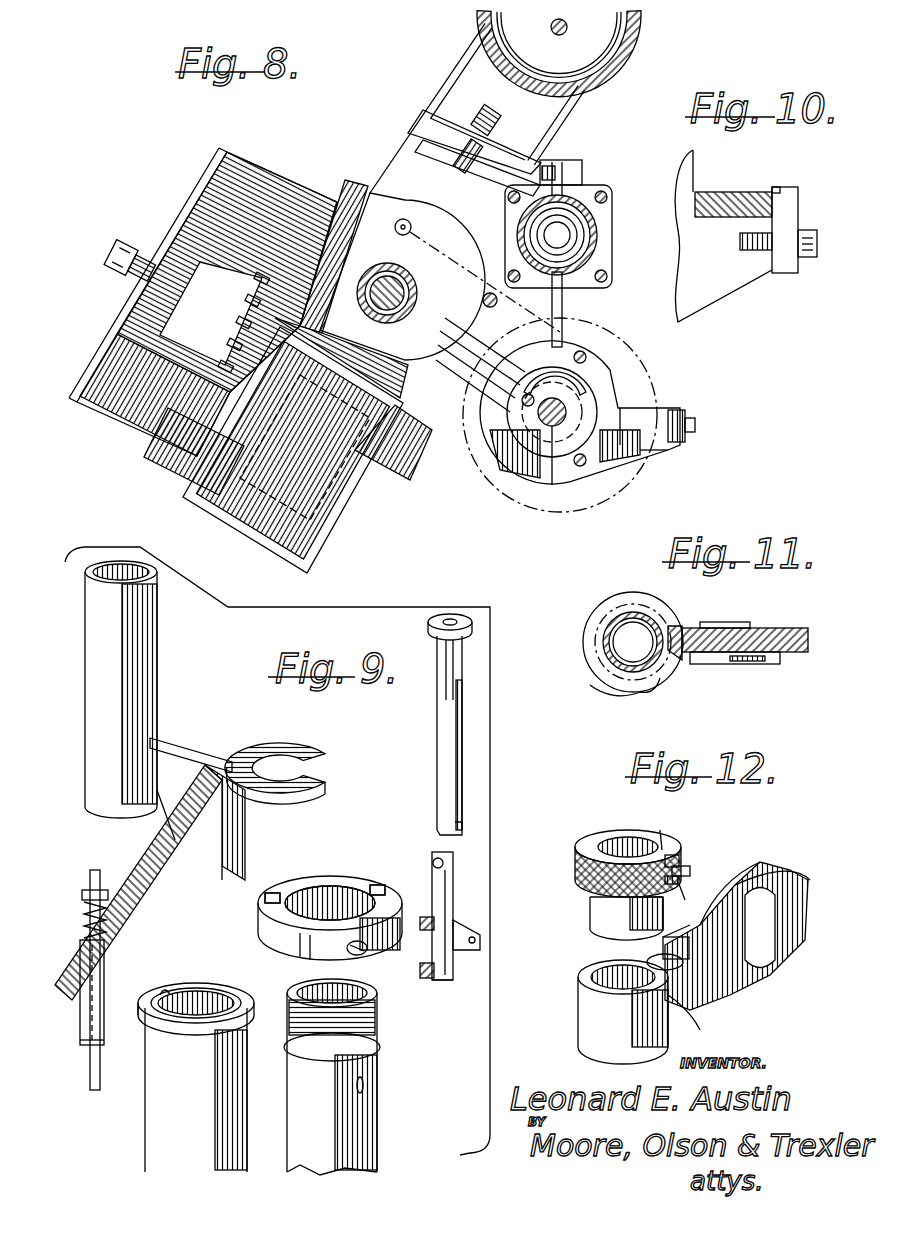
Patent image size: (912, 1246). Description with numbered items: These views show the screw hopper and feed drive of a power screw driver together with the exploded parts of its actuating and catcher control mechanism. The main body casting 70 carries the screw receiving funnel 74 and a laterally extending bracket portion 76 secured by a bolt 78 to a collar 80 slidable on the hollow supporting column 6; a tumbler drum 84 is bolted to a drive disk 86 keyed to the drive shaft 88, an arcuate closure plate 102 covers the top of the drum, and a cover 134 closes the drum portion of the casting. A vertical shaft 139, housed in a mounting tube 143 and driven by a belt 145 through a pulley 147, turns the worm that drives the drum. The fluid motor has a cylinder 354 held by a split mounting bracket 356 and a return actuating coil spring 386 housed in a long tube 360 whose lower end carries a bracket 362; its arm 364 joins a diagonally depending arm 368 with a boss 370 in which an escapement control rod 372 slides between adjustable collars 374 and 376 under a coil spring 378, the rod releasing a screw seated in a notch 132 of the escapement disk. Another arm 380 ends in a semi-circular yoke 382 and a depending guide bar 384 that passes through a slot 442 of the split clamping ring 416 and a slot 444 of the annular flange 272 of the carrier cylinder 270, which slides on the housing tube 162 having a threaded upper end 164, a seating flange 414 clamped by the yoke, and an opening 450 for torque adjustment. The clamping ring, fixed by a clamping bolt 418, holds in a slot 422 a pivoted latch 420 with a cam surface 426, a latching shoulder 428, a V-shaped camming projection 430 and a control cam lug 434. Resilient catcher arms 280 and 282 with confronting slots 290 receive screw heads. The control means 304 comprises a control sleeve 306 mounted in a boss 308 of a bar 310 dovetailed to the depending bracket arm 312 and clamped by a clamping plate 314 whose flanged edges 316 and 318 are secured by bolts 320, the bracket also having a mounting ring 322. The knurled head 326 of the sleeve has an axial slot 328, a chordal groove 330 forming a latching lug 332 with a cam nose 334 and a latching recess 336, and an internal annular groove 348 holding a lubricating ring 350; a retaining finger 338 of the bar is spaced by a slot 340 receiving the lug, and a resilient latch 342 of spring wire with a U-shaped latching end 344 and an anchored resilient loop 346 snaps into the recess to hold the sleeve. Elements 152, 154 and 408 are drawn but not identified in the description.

In FIG. 8, the supporting column 6 is at (630, 47).
In FIG. 8, the collar 80 is at (605, 72).
In FIG. 8, the pin 408 is at (548, 28).
In FIG. 8, the bolt 78 is at (425, 125).
In FIG. 8, the bracket portion 76 is at (410, 160).
In FIG. 8, the pulley 147 is at (390, 195).
In FIG. 8, the drive shaft 88 is at (120, 248).
In FIG. 8, the drive disk 86 is at (100, 420).
In FIG. 8, the tumbler drum 84 is at (112, 450).
In FIG. 8, the main body casting 70 is at (175, 517).
In FIG. 8, the closure plate 102 is at (262, 348).
In FIG. 8, the screw receiving funnel 74 is at (335, 560).
In FIG. 8, the cover 134 is at (410, 480).
In FIG. 8, the mounting tube 143 is at (410, 290).
In FIG. 8, the vertical shaft 139 is at (405, 300).
In FIG. 8, the link 154 is at (482, 355).
In FIG. 8, the link 152 is at (480, 368).
In FIG. 8, the cylinder 354 is at (575, 200).
In FIG. 8, the split mounting bracket 356 is at (600, 230).
In FIG. 8, the return actuating coil spring 386 is at (578, 238).
In FIG. 8, the long tube 360 is at (570, 250).
In FIG. 9, the long tube 360 is at (92, 705).
In FIG. 8, the bracket 362 is at (566, 290).
In FIG. 9, the bracket 362 is at (210, 752).
In FIG. 8, the yoke 382 is at (620, 380).
In FIG. 9, the yoke 382 is at (272, 760).
In FIG. 8, the notch 132 is at (552, 484).
In FIG. 8, the belt 145 is at (485, 480).
In FIG. 8, the bar 310 is at (660, 408).
In FIG. 10, the bar 310 is at (728, 200).
In FIG. 12, the bar 310 is at (790, 930).
In FIG. 8, the bolts 320 is at (695, 420).
In FIG. 10, the bolts 320 is at (808, 230).
In FIG. 8, the mounting ring 322 is at (670, 452).
In FIG. 10, the bracket arm 312 is at (706, 295).
In FIG. 10, the clamping plate 314 is at (790, 265).
In FIG. 10, the flanged edge 318 is at (778, 187).
In FIG. 10, the flanged edge 316 is at (780, 270).
In FIG. 11, the knurled head portion 326 is at (583, 658).
In FIG. 12, the knurled head portion 326 is at (578, 878).
In FIG. 11, the catcher arm 280 is at (612, 625).
In FIG. 11, the catcher arm 282 is at (660, 600).
In FIG. 11, the control means 304 is at (590, 690).
In FIG. 11, the axial slot 328 is at (660, 692).
In FIG. 11, the latching lug 332 is at (690, 622).
In FIG. 12, the latching lug 332 is at (688, 868).
In FIG. 11, the retaining finger 338 is at (735, 635).
In FIG. 12, the retaining finger 338 is at (663, 945).
In FIG. 11, the cam nose 334 is at (688, 664).
In FIG. 12, the cam nose 334 is at (684, 899).
In FIG. 11, the U-shaped latching end 344 is at (758, 664).
In FIG. 12, the U-shaped latching end 344 is at (695, 1019).
In FIG. 12, the control sleeve 306 is at (600, 908).
In FIG. 12, the lubricating ring 350 is at (620, 920).
In FIG. 12, the internal annular groove 348 is at (663, 832).
In FIG. 12, the chordal groove 330 is at (675, 858).
In FIG. 12, the latching recess 336 is at (680, 880).
In FIG. 12, the resilient loop 346 is at (745, 862).
In FIG. 12, the resilient latch 342 is at (770, 935).
In FIG. 12, the slot 340 is at (690, 985).
In FIG. 12, the boss 308 is at (580, 1022).
In FIG. 9, the depending arm 368 is at (150, 905).
In FIG. 9, the arm 380 is at (212, 835).
In FIG. 9, the guide bar 384 is at (238, 880).
In FIG. 9, the arm 364 is at (160, 810).
In FIG. 9, the boss 370 is at (80, 990).
In FIG. 9, the escapement control rod 372 is at (90, 875).
In FIG. 9, the adjustable collar 374 is at (82, 898).
In FIG. 9, the coil spring 378 is at (84, 925).
In FIG. 9, the adjustable collar 376 is at (82, 1045).
In FIG. 9, the confronting slots 290 is at (440, 818).
In FIG. 9, the split clamping ring 416 is at (298, 890).
In FIG. 9, the slot 422 is at (380, 888).
In FIG. 9, the slot 442 is at (280, 886).
In FIG. 9, the clamping bolt 418 is at (345, 950).
In FIG. 9, the control cam lug 434 is at (462, 935).
In FIG. 9, the camming projection 430 is at (425, 915).
In FIG. 9, the latch 420 is at (435, 940).
In FIG. 9, the latching shoulder 428 is at (420, 970).
In FIG. 9, the cam surface 426 is at (429, 993).
In FIG. 9, the cylinder 270 is at (152, 1113).
In FIG. 9, the annular flange 272 is at (145, 1025).
In FIG. 9, the slot 444 is at (158, 995).
In FIG. 9, the housing tube 162 is at (355, 1115).
In FIG. 9, the threaded upper end 164 is at (375, 1018).
In FIG. 9, the seating flange 414 is at (372, 1052).
In FIG. 9, the opening 450 is at (365, 1086).